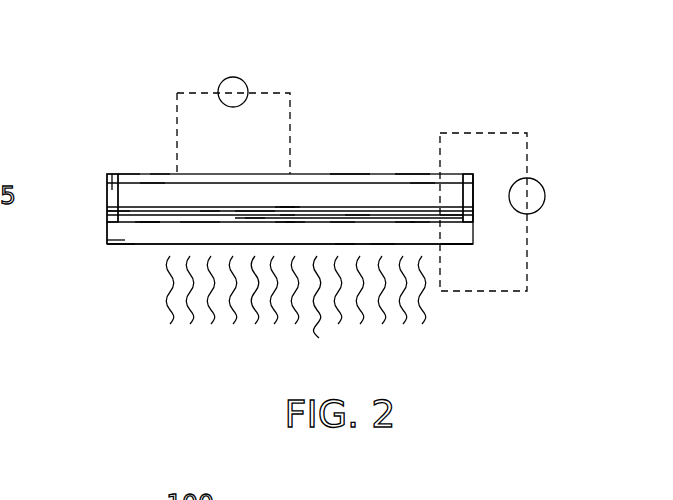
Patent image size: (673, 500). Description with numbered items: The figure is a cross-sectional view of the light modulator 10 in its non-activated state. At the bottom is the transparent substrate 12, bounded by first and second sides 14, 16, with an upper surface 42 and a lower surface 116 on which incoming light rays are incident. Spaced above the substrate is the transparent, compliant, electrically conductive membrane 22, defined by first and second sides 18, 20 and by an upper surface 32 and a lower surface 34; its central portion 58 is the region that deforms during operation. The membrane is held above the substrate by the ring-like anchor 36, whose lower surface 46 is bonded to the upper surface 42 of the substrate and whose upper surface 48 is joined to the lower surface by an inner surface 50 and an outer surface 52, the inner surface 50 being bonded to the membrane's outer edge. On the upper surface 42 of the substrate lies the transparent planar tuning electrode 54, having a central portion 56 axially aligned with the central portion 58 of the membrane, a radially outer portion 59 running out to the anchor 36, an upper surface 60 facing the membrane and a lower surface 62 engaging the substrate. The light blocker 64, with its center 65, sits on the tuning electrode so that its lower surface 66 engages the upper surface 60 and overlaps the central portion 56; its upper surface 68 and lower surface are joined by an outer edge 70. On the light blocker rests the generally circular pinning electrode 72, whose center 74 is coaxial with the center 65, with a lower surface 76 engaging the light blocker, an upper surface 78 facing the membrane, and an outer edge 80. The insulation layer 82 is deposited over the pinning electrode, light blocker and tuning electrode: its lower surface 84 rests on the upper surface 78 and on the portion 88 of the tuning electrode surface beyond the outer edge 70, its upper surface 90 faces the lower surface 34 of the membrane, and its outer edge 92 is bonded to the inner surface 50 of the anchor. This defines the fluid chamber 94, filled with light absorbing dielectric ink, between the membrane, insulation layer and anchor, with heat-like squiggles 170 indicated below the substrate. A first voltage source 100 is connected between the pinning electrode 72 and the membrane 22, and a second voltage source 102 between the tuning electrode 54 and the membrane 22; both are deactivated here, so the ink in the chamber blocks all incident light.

The light modulator 10 is at (588, 296).
The transparent substrate 12 is at (125, 258).
The first side of substrate 14 is at (103, 238).
The second side of substrate 16 is at (470, 233).
The first side of membrane 18 is at (127, 173).
The second side of membrane 20 is at (477, 185).
The membrane 22 is at (348, 170).
The upper surface of membrane 32 is at (412, 173).
The lower surface of membrane 34 is at (157, 190).
The anchor 36 is at (103, 181).
The upper surface of substrate 42 is at (150, 226).
The lower surface of anchor 46 is at (107, 227).
The upper surface of anchor 48 is at (108, 173).
The inner surface of anchor 50 is at (160, 226).
The outer surface of anchor 52 is at (483, 181).
The tuning electrode 54 is at (417, 225).
The central portion of tuning electrode 56 is at (295, 225).
The central portion of membrane 58 is at (290, 212).
The radially outer portion of tuning electrode 59 is at (212, 225).
The upper surface of tuning electrode 60 is at (407, 225).
The lower surface of tuning electrode 62 is at (113, 240).
The light blocker 64 is at (385, 245).
The center of light blocker 65 is at (288, 225).
The lower surface of light blocker 66 is at (343, 225).
The upper surface of light blocker 68 is at (243, 213).
The outer edge of light blocker 70 is at (354, 212).
The pinning electrode 72 is at (258, 225).
The center of pinning electrode 74 is at (285, 213).
The lower surface of pinning electrode 76 is at (287, 225).
The upper surface of pinning electrode 78 is at (265, 212).
The outer edge of pinning electrode 80 is at (341, 220).
The insulation layer 82 is at (461, 213).
The lower surface of insulation layer 84 is at (190, 225).
The portion of tuning electrode upper surface 88 is at (212, 210).
The upper surface of insulation layer 90 is at (167, 197).
The outer edge of insulation layer 92 is at (107, 212).
The fluid chamber 94 is at (422, 188).
The first voltage source 100 is at (232, 77).
The second voltage source 102 is at (546, 198).
The lower surface of substrate 116 is at (447, 245).
The heat flow 170 is at (341, 309).